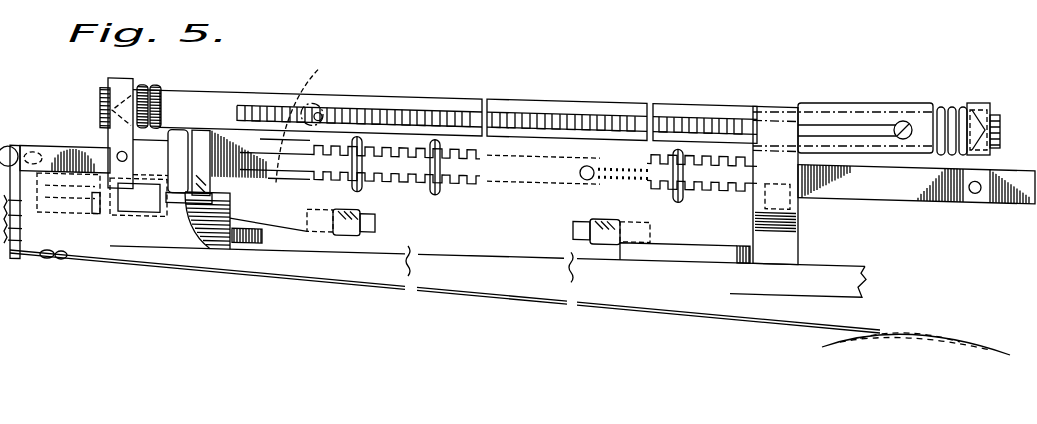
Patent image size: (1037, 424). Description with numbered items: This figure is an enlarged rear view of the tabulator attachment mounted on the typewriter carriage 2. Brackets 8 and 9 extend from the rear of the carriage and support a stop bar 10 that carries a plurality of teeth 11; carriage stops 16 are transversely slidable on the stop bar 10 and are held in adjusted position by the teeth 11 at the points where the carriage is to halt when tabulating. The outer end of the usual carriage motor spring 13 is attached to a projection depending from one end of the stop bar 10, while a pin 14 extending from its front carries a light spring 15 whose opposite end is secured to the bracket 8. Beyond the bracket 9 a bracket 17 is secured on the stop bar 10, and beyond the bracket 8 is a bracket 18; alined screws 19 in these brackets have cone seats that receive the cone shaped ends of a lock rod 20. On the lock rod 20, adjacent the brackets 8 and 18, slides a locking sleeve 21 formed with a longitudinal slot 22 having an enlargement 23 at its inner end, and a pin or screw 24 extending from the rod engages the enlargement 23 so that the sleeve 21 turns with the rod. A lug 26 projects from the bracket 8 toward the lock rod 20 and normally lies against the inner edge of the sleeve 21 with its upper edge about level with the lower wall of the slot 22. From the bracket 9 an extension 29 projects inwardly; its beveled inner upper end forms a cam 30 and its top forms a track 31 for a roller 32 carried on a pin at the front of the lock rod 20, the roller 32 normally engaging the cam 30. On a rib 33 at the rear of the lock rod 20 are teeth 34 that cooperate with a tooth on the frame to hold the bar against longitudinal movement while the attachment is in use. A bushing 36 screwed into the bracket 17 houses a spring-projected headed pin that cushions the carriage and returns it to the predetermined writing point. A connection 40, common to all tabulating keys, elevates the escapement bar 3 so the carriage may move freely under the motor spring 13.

The carriage 2 is at (813, 252).
The escapement bar 3 is at (362, 226).
The bracket 8 is at (790, 200).
The bracket 9 is at (222, 190).
The stop bar 10 is at (488, 146).
The teeth 11 is at (410, 148).
The carriage motor spring 13 is at (110, 255).
The pin 14 is at (580, 162).
The light spring 15 is at (632, 160).
The carriage stops 16 is at (355, 184).
The bracket 17 is at (108, 75).
The bracket 18 is at (973, 85).
The screws 19 is at (103, 97).
The lock rod 20 is at (537, 97).
The locking sleeve 21 is at (873, 80).
The longitudinal slot 22 is at (818, 95).
The enlargement 23 is at (897, 107).
The pin or screw 24 is at (910, 97).
The lug 26 is at (772, 96).
The extension 29 is at (253, 169).
The cam 30 is at (313, 114).
The track 31 is at (167, 158).
The roller 32 is at (322, 103).
The rib 33 is at (425, 103).
The teeth 34 is at (377, 101).
The bushing 36 is at (137, 143).
The connection 40 is at (73, 208).